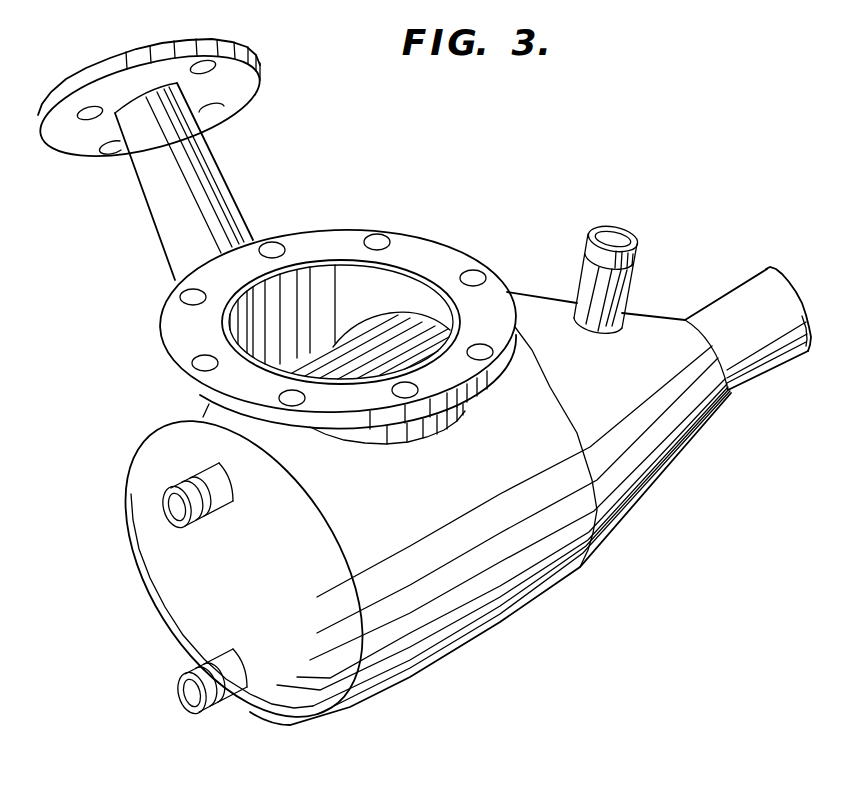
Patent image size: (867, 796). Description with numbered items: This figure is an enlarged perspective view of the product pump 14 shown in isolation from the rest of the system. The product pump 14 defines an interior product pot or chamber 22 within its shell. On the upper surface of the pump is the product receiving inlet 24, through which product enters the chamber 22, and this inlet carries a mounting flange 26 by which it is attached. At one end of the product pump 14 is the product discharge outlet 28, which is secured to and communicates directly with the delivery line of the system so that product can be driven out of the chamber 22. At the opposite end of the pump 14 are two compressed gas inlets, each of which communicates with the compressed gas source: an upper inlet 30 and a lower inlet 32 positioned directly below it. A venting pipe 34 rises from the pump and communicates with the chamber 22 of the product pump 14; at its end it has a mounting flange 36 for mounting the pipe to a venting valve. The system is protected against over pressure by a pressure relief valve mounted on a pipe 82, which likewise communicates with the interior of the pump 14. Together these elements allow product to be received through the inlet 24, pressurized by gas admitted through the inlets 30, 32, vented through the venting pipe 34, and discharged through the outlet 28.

The product pump 14 is at (420, 397).
The interior product pot or chamber 22 is at (392, 650).
The product receiving inlet 24 is at (387, 290).
The mounting flange 26 is at (455, 262).
The product discharge outlet 28 is at (795, 360).
The upper inlet 30 is at (213, 513).
The lower inlet 32 is at (210, 713).
The venting pipe 34 is at (207, 172).
The mounting flange 36 is at (247, 78).
The pipe 82 is at (630, 280).